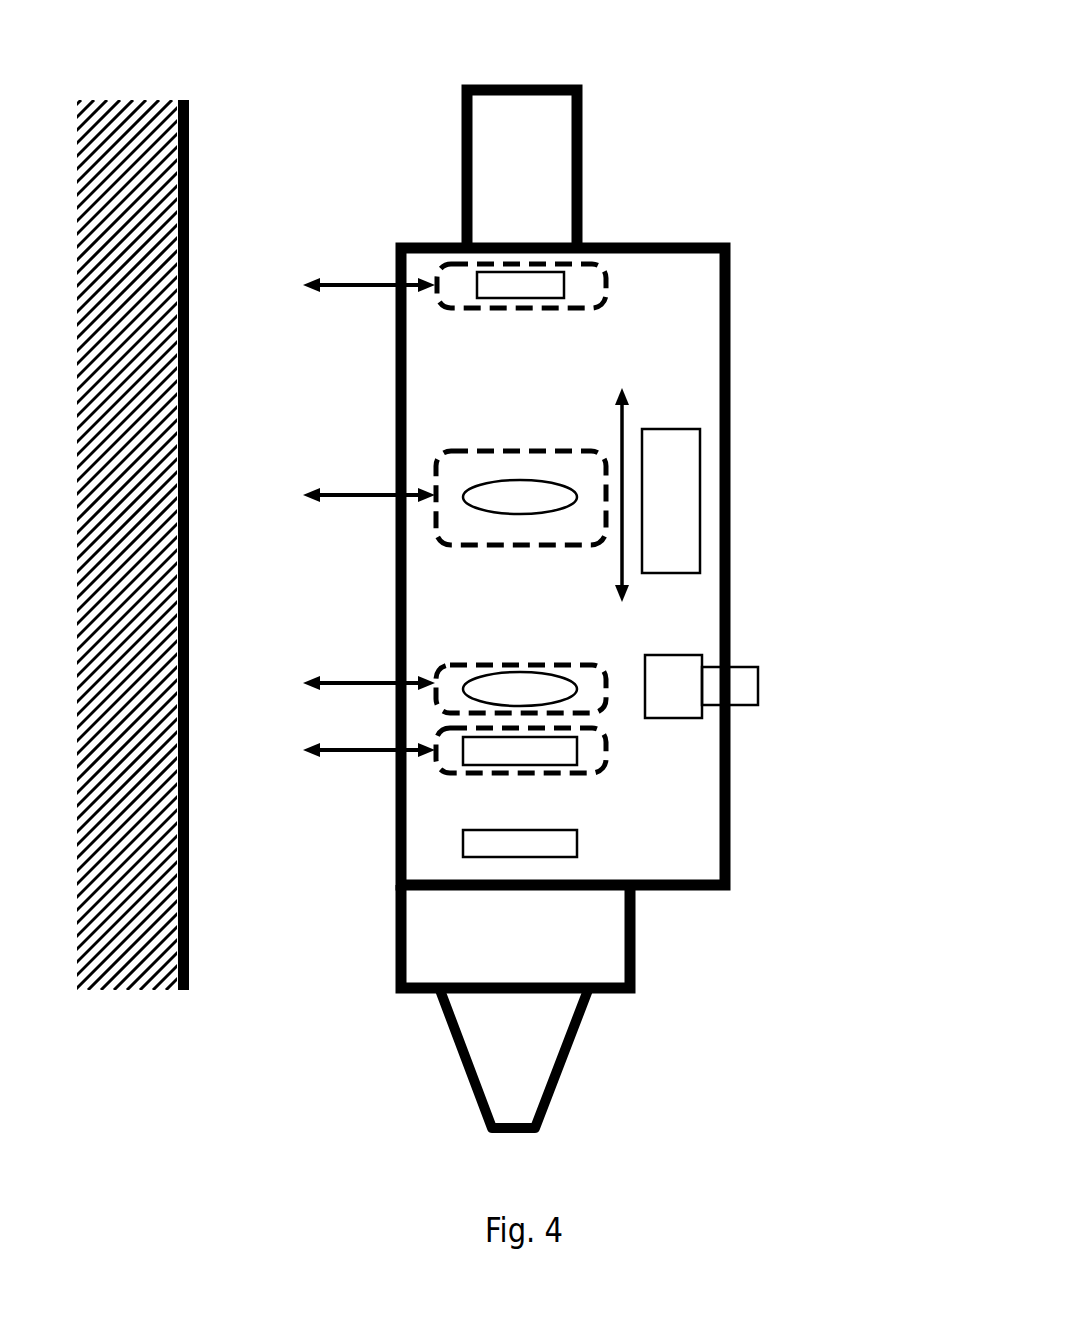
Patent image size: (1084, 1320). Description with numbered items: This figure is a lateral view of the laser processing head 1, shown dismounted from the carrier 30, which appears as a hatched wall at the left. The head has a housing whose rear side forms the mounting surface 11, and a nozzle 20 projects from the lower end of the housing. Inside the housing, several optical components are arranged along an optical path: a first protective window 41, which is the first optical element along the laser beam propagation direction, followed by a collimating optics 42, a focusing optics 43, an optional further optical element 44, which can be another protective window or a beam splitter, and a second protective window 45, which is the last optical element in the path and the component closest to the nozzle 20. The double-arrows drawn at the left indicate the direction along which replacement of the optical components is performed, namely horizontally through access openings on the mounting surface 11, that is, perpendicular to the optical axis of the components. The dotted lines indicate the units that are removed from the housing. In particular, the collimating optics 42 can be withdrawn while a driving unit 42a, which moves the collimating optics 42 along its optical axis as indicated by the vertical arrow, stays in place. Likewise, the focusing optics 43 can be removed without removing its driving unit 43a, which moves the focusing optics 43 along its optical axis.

The laser processing head 1 is at (769, 17).
The mounting surface 11 is at (396, 355).
The nozzle 20 is at (565, 1068).
The carrier 30 is at (127, 140).
The first protective window 41 is at (540, 287).
The collimating optics 42 is at (535, 492).
The driving unit 42a is at (695, 500).
The focusing optics 43 is at (535, 693).
The driving unit 43a is at (745, 680).
The further optical element 44 is at (545, 750).
The second protective window 45 is at (550, 843).